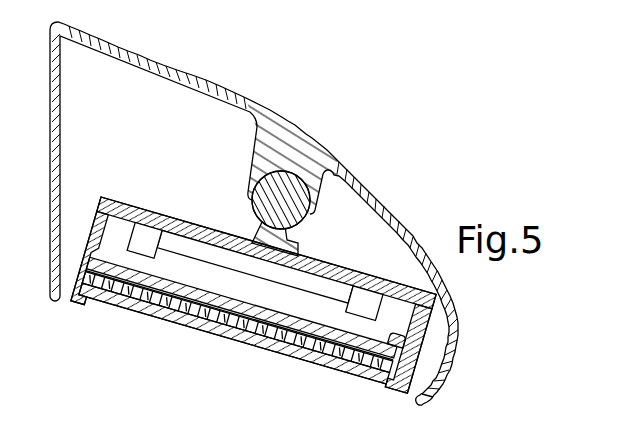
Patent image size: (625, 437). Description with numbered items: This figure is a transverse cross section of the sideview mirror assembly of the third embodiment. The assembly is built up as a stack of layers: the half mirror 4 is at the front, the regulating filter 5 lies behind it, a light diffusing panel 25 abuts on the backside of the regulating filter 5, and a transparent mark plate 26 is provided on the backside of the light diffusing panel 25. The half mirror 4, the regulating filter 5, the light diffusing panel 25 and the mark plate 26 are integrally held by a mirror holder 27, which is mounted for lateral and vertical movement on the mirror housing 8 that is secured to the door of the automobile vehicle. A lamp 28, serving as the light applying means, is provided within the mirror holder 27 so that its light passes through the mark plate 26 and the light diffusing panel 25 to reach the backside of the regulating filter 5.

The half mirror 4 is at (330, 362).
The regulating filter 5 is at (424, 384).
The mirror housing 8 is at (218, 86).
The light diffusing panel 25 is at (404, 358).
The mark plate 26 is at (405, 350).
The mirror holder 27 is at (347, 265).
The lamp 28 is at (175, 240).